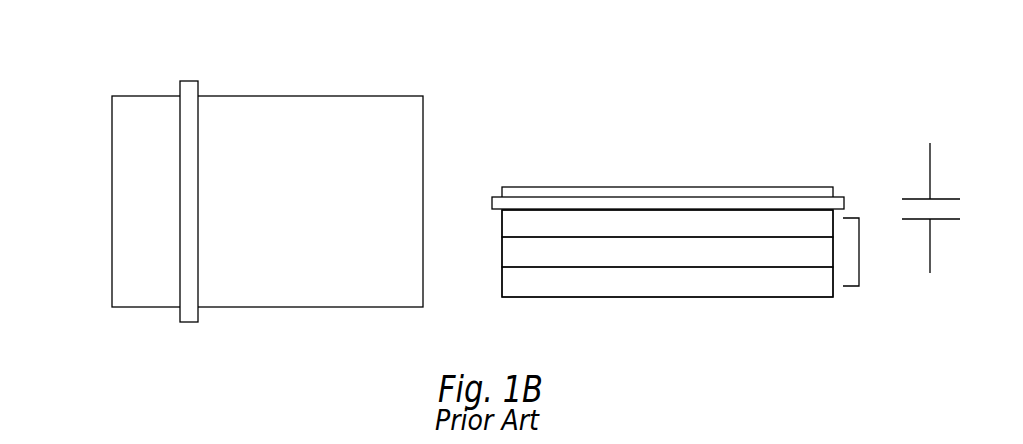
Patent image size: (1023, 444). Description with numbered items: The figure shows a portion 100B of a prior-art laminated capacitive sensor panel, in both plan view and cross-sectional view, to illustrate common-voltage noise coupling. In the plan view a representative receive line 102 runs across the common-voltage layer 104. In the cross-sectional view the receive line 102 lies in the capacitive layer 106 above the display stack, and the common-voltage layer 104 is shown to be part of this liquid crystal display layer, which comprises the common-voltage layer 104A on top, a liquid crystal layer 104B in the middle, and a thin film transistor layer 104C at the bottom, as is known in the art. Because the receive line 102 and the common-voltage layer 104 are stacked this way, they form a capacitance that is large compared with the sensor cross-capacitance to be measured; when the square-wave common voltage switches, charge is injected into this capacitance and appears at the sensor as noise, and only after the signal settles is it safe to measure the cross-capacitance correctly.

The portion of the sensor panel 100B is at (62, 61).
The receive line 102 is at (198, 317).
The VCOM layer 104 is at (370, 308).
The VCOM layer 104A is at (502, 224).
The liquid crystal layer 104B is at (502, 254).
The TFT layer 104C is at (502, 284).
The capacitive layer 106 is at (846, 178).